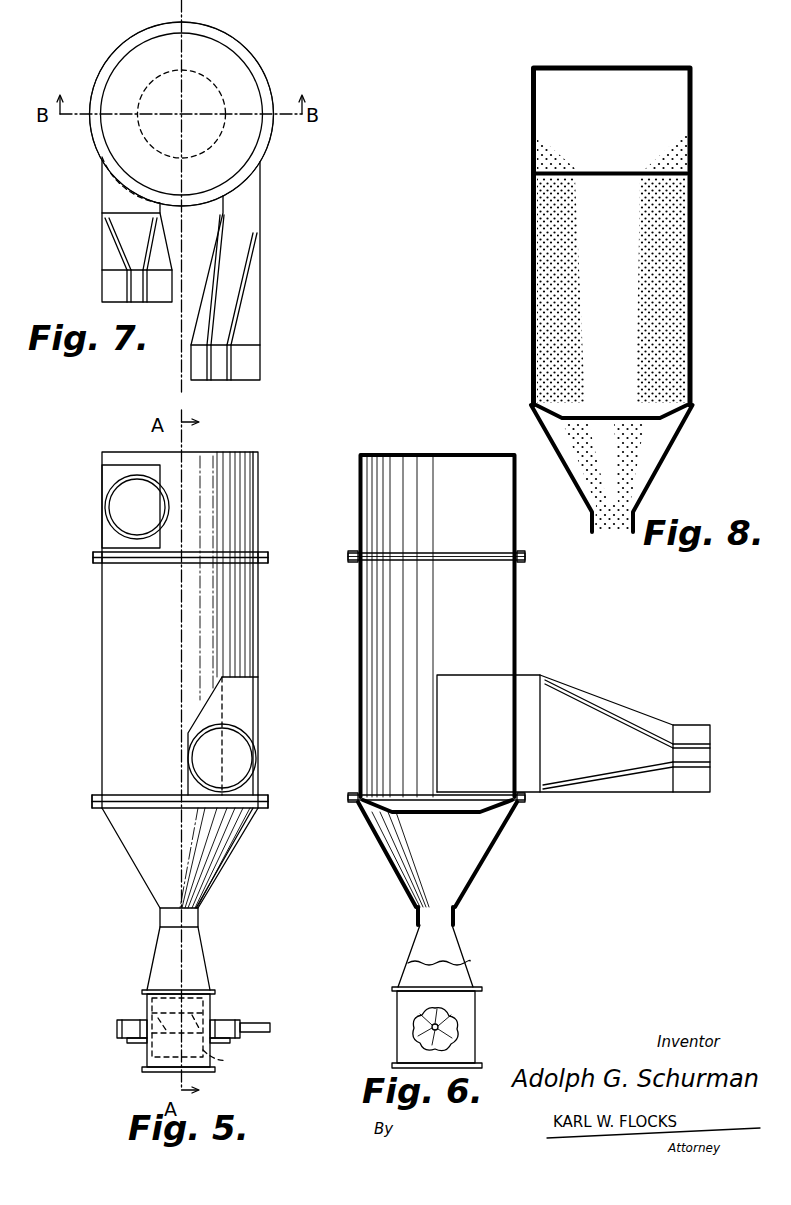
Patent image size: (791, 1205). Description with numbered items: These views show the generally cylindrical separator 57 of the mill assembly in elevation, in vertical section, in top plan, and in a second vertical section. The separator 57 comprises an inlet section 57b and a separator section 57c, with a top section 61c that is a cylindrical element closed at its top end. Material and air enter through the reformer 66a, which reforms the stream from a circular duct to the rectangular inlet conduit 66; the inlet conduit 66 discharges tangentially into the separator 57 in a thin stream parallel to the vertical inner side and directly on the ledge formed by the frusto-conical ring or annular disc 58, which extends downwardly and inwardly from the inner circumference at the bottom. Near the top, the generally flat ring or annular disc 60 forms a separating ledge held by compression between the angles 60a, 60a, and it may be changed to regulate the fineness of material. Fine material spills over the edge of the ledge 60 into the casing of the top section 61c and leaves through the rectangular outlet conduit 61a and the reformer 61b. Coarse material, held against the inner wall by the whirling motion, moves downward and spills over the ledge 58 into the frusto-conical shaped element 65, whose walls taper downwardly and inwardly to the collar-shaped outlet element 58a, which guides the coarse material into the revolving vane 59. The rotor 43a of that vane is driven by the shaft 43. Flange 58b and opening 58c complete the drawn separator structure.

In FIG. 5, the shaft 43 is at (278, 1013).
In FIG. 5, the rotor 43a is at (220, 1058).
In FIG. 6, the rotor 43a is at (453, 1027).
In FIG. 7, the separator 57 is at (260, 117).
In FIG. 8, the separator 57 is at (531, 247).
In FIG. 5, the separator 57 is at (247, 655).
In FIG. 6, the separator 57 is at (517, 655).
In FIG. 8, the inlet section 57b is at (635, 250).
In FIG. 8, the separator section 57c is at (667, 113).
In FIG. 8, the ring or annular disc 58 is at (668, 417).
In FIG. 5, the ring or annular disc 58 is at (92, 802).
In FIG. 6, the ring or annular disc 58 is at (495, 813).
In FIG. 5, the collar-shaped outlet element 58a is at (192, 918).
In FIG. 6, the collar-shaped outlet element 58a is at (443, 920).
In FIG. 5, the plate flange 58b is at (95, 795).
In FIG. 6, the plate flange 58b is at (348, 797).
In FIG. 7, the central opening 58c is at (212, 80).
In FIG. 5, the revolving vane 59 is at (148, 1025).
In FIG. 8, the ring or annular disc 60 is at (675, 177).
In FIG. 5, the ring or annular disc 60 is at (93, 557).
In FIG. 6, the ring or annular disc 60 is at (500, 562).
In FIG. 7, the angles 60a is at (112, 69).
In FIG. 5, the angles 60a is at (95, 550).
In FIG. 6, the angles 60a is at (348, 553).
In FIG. 7, the outlet conduit 61a is at (110, 197).
In FIG. 5, the outlet conduit 61a is at (110, 472).
In FIG. 7, the reformer 61b is at (123, 233).
In FIG. 8, the top section 61c is at (531, 113).
In FIG. 5, the top section 61c is at (287, 473).
In FIG. 6, the top section 61c is at (358, 470).
In FIG. 8, the frusto-conical shaped element 65 is at (657, 462).
In FIG. 5, the frusto-conical shaped element 65 is at (218, 845).
In FIG. 6, the frusto-conical shaped element 65 is at (477, 872).
In FIG. 7, the inlet conduit 66 is at (252, 192).
In FIG. 5, the inlet conduit 66 is at (258, 713).
In FIG. 6, the inlet conduit 66 is at (502, 780).
In FIG. 7, the reformer 66a is at (240, 237).
In FIG. 6, the reformer 66a is at (592, 768).